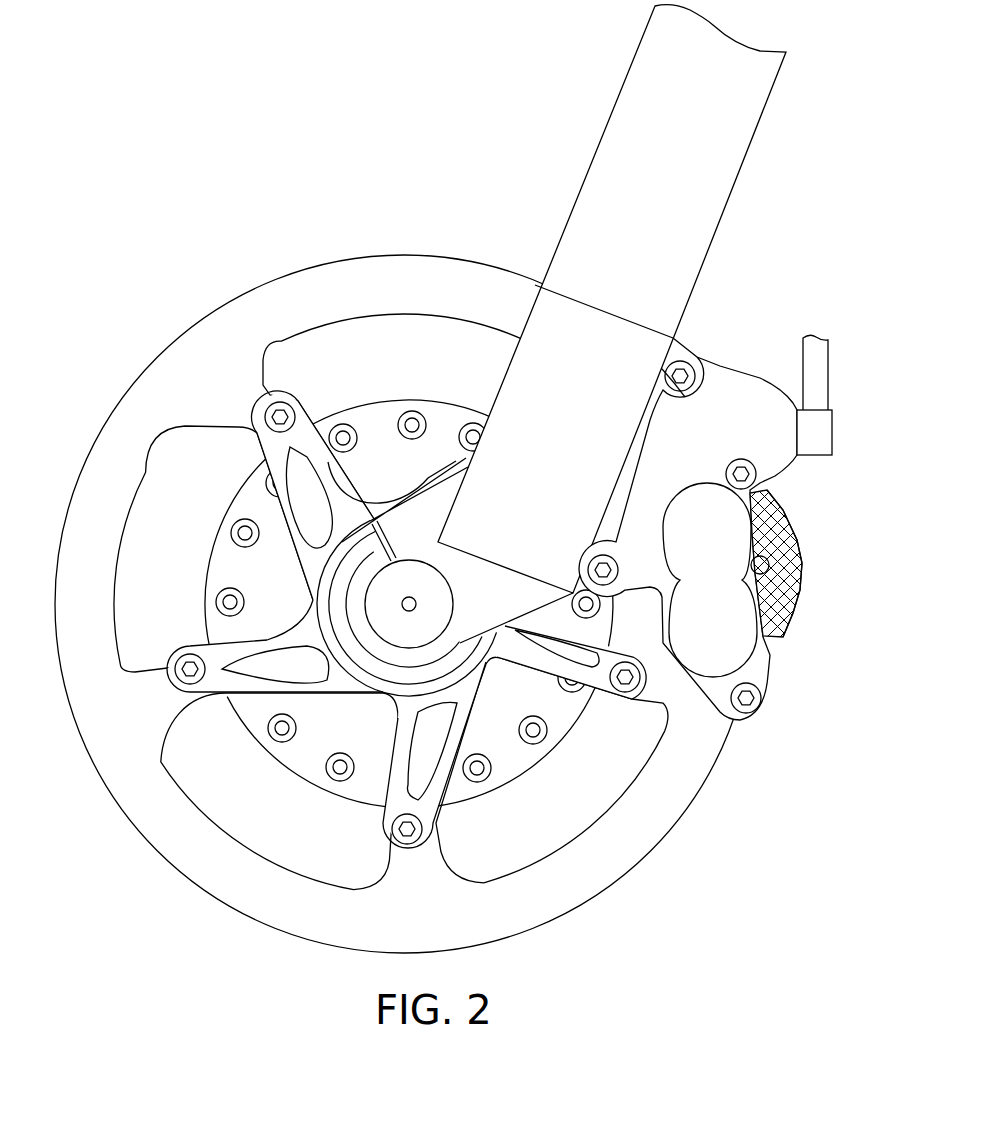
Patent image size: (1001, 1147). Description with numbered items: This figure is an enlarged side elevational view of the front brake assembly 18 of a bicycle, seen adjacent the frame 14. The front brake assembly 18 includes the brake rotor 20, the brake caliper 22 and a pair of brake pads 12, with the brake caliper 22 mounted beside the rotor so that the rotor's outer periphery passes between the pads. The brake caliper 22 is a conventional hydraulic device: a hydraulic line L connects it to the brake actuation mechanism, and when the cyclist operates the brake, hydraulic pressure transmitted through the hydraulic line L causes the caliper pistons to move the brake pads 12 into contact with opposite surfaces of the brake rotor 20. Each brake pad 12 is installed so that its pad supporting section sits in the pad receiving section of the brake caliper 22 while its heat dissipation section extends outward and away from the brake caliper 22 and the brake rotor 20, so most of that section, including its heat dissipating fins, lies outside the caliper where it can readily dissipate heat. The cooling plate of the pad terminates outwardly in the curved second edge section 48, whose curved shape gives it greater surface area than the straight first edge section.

The brake pad 12 is at (795, 520).
The frame 14 is at (662, 103).
The front brake assembly 18 is at (317, 218).
The brake rotor 20 is at (195, 375).
The brake caliper 22 is at (733, 404).
The second edge section 48 is at (805, 558).
The hydraulic line L is at (815, 378).